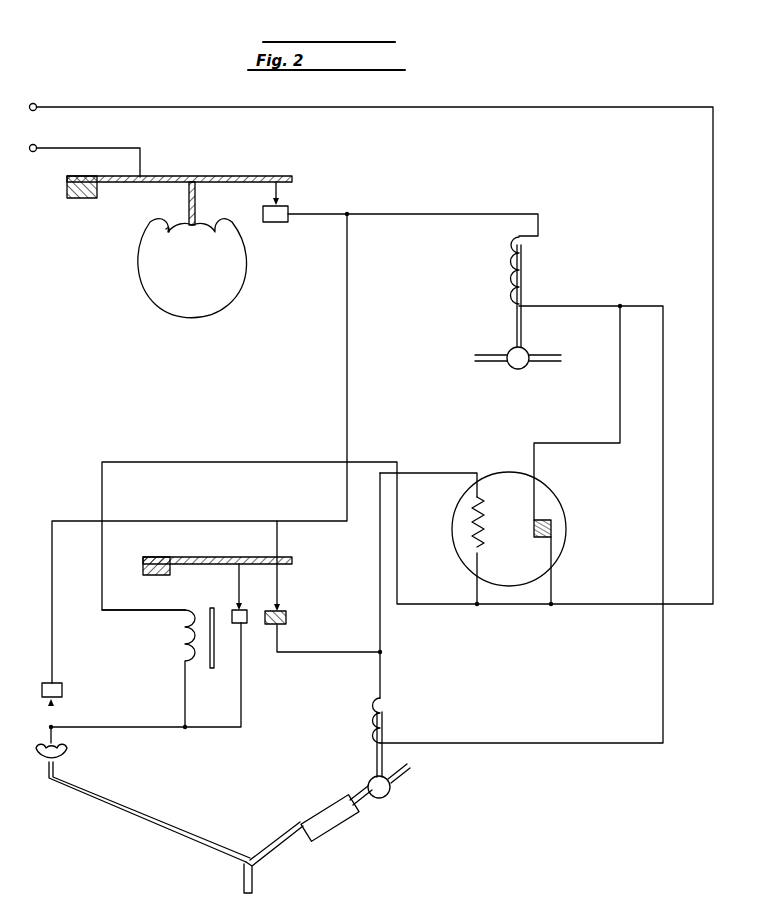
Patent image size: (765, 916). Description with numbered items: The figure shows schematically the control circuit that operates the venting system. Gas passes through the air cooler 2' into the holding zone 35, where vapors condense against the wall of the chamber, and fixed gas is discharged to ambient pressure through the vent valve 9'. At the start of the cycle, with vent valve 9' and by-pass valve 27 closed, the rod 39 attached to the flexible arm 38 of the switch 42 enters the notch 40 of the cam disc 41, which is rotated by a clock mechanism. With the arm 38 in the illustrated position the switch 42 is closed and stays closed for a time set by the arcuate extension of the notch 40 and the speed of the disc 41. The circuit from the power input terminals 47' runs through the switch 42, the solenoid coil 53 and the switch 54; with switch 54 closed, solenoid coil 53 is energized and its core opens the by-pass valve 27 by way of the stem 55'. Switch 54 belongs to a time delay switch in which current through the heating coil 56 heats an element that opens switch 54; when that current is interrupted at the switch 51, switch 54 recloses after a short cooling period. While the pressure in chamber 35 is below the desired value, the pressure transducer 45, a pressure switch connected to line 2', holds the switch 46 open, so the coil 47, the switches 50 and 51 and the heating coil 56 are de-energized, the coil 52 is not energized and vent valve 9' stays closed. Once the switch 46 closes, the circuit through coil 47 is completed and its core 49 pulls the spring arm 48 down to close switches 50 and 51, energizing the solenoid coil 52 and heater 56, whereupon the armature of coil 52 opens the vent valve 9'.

The power input terminals 47' is at (83, 141).
The flexible arm 38 is at (180, 176).
The rod 39 is at (196, 203).
The notch 40 is at (175, 230).
The cam disc 41 is at (219, 293).
The switch 42 is at (289, 212).
The solenoid coil 53 is at (510, 279).
The valve stem 55' is at (490, 296).
The by-pass valve 27 is at (506, 352).
The switch 54 is at (553, 528).
The heating coil 56 is at (479, 540).
The spring arm 48 is at (225, 548).
The coil 47 is at (170, 668).
The core 49 is at (215, 668).
The switch 50 is at (243, 624).
The switch 51 is at (288, 618).
The switch 46 is at (48, 714).
The pressure transducer 45 is at (42, 763).
The solenoid coil 52 is at (372, 735).
The vent valve 9' is at (389, 793).
The holding zone 35 is at (332, 828).
The air cooler 2' is at (273, 860).